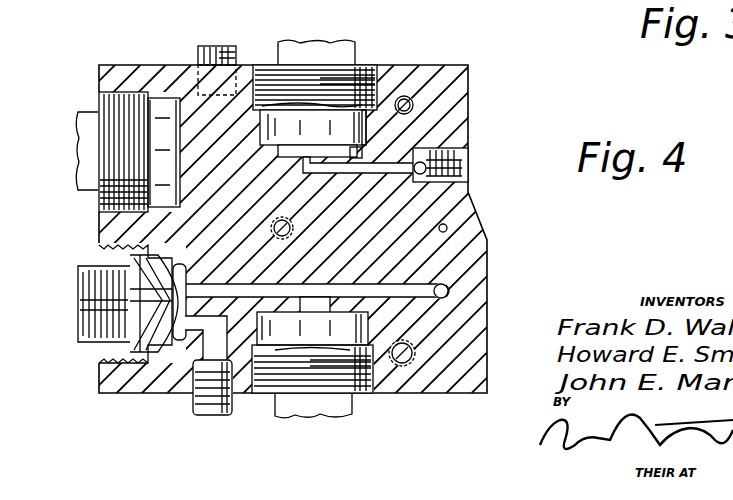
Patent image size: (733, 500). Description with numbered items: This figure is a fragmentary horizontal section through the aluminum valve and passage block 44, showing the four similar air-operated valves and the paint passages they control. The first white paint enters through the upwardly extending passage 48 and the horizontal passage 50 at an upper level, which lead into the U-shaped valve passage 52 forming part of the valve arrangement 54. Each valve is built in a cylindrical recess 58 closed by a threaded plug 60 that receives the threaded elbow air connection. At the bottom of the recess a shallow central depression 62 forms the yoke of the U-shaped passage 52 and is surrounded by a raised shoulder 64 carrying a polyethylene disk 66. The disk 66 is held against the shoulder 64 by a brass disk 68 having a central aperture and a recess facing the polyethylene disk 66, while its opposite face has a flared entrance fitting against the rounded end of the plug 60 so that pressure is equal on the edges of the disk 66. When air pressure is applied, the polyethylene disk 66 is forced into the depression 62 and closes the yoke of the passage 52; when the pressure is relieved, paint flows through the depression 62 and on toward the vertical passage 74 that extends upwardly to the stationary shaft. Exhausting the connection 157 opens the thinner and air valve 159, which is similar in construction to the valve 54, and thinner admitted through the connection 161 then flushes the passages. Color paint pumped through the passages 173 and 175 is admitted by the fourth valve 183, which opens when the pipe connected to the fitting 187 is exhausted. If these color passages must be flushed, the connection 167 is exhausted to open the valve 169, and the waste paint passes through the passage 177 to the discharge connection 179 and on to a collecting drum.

The valve and passage block 44 is at (470, 118).
The upwardly extending passage 48 is at (420, 178).
The horizontal passage 50 is at (388, 175).
The U-shaped valve passage 52 is at (306, 158).
The valve arrangement 54 is at (352, 95).
The cylindrical recess 58 is at (258, 120).
The threaded plug 60 is at (408, 96).
The shallow central depression 62 is at (276, 152).
The raised shoulder 64 is at (356, 152).
The polyethylene disk 66 is at (367, 140).
The brass disk 68 is at (262, 103).
The vertical passage 74 is at (448, 230).
The connection 157 is at (76, 135).
The thinner and air valve 159 is at (128, 100).
The connection 161 is at (210, 48).
The connection 167 is at (82, 322).
The valve 169 is at (118, 265).
The passage 173 is at (447, 294).
The passage 175 is at (415, 287).
The passage 177 is at (222, 363).
The discharge connection 179 is at (192, 398).
The fourth valve 183 is at (322, 385).
The fitting 187 is at (296, 408).